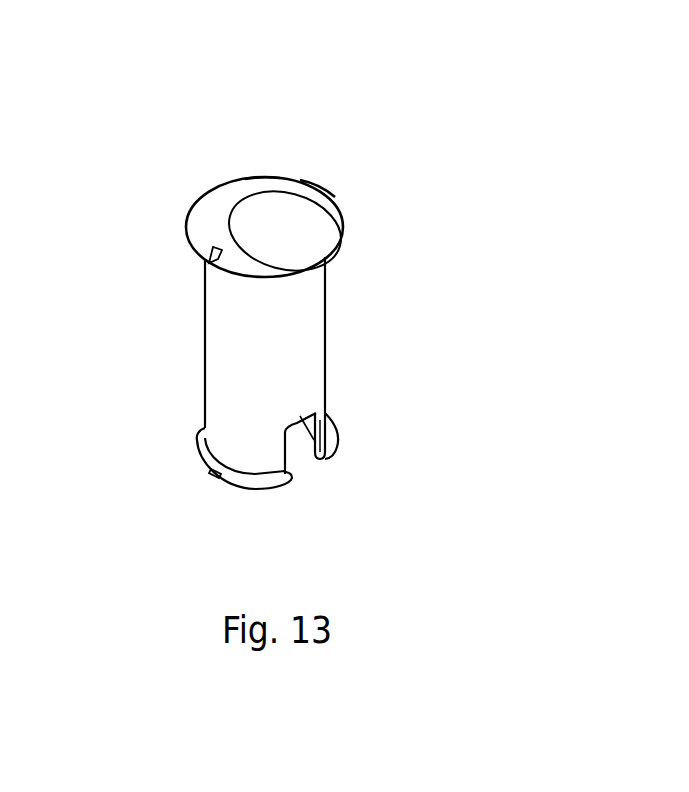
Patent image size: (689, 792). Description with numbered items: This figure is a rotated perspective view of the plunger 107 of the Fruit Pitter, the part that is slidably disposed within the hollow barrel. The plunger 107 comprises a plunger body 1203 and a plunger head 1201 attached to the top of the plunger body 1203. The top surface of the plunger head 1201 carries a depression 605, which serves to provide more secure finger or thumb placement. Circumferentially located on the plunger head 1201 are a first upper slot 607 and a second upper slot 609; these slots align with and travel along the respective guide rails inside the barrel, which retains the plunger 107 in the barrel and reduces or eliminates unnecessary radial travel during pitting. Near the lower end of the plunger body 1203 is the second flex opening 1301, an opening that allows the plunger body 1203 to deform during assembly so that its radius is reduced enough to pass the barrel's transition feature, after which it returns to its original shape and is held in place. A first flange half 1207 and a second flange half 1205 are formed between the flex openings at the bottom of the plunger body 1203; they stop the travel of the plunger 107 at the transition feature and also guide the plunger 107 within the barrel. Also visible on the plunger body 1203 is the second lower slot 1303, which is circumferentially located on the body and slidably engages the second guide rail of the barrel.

The plunger 107 is at (257, 180).
The first upper slot 607 is at (317, 190).
The plunger head 1201 is at (193, 208).
The depression 605 is at (310, 238).
The second upper slot 609 is at (207, 260).
The plunger body 1203 is at (325, 345).
The second flange half 1205 is at (337, 447).
The first flange half 1207 is at (198, 453).
The second flex opening 1301 is at (298, 460).
The second lower slot 1303 is at (215, 477).